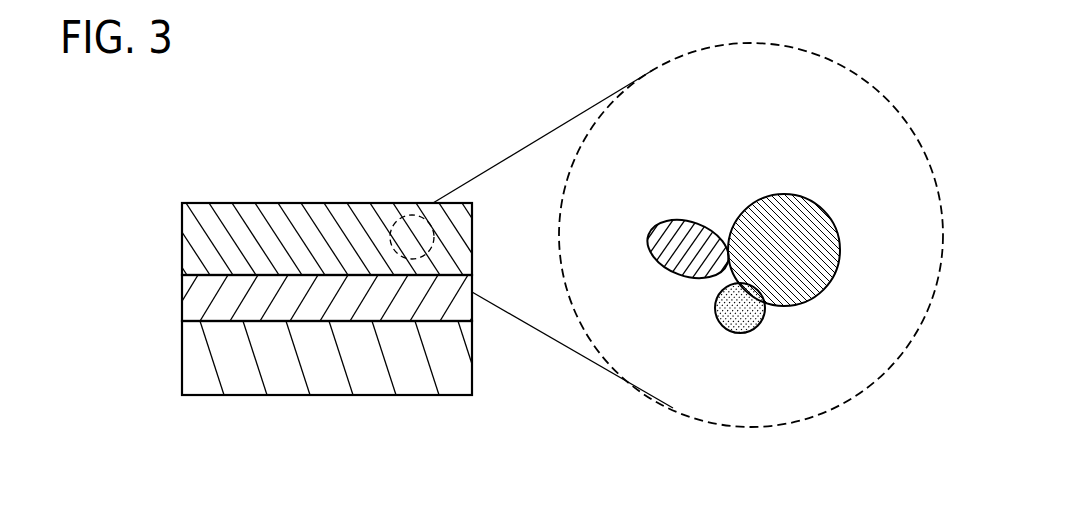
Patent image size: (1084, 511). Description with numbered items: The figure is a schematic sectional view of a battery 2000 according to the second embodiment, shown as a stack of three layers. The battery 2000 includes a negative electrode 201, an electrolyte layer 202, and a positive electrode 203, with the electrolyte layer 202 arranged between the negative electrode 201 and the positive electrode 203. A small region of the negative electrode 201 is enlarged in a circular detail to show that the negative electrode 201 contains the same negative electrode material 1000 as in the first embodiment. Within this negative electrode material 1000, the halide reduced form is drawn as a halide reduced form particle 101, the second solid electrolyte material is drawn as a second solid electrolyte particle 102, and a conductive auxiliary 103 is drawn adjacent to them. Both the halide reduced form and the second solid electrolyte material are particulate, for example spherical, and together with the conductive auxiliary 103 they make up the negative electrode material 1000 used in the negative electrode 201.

The battery 2000 is at (359, 150).
The negative electrode 201 is at (217, 227).
The electrolyte layer 202 is at (223, 297).
The positive electrode 203 is at (220, 355).
The negative electrode material 1000 is at (779, 149).
The halide reduced form particle 101 is at (828, 214).
The second solid electrolyte particle 102 is at (650, 237).
The conductive auxiliary 103 is at (733, 326).